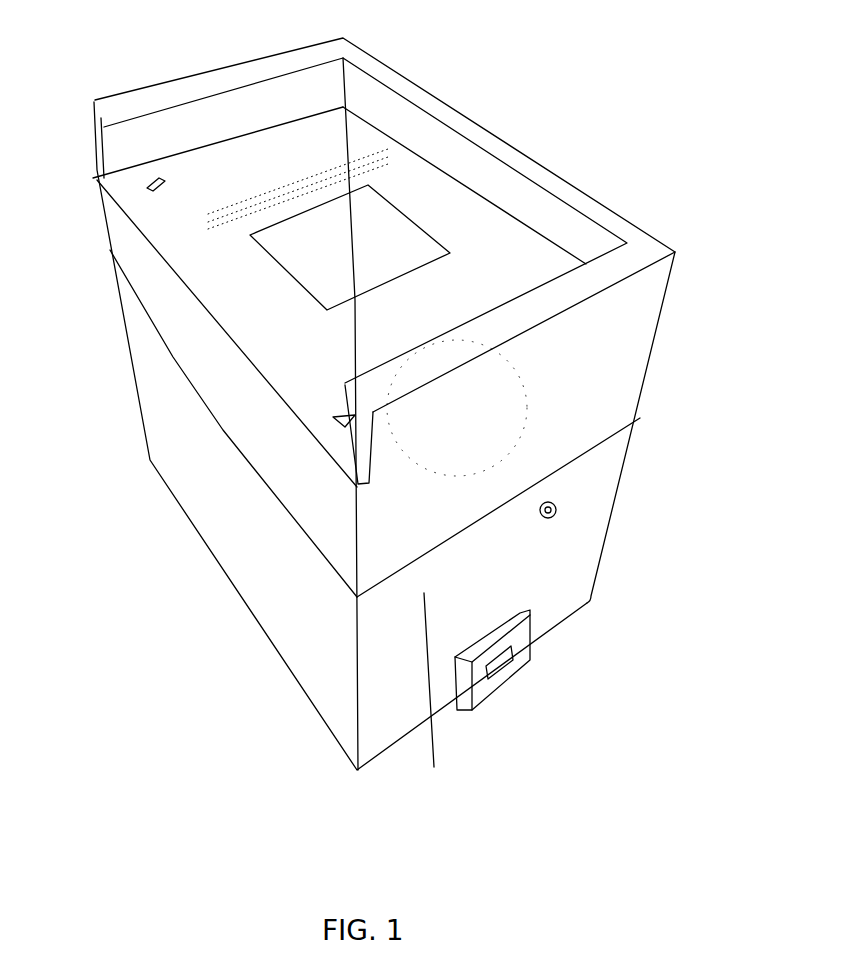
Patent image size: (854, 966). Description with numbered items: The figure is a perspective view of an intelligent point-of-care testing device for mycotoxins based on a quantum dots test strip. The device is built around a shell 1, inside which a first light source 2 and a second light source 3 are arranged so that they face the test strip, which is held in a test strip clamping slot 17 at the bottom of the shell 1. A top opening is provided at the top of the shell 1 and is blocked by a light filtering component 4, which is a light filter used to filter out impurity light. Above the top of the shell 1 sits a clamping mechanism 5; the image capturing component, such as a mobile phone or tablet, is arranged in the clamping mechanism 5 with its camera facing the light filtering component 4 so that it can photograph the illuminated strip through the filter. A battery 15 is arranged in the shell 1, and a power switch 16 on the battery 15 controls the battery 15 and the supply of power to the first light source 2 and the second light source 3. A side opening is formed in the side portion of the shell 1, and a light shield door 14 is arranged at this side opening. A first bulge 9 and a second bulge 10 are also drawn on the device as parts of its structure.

The shell 1 is at (140, 377).
The first light source 2 is at (230, 203).
The second light source 3 is at (468, 380).
The light filtering component 4 is at (322, 272).
The clamping mechanism 5 is at (222, 105).
The first bulge 9 is at (150, 186).
The second bulge 10 is at (340, 420).
The light shield door 14 is at (487, 665).
The battery 15 is at (537, 455).
The power switch 16 is at (547, 515).
The test strip clamping slot 17 is at (440, 705).